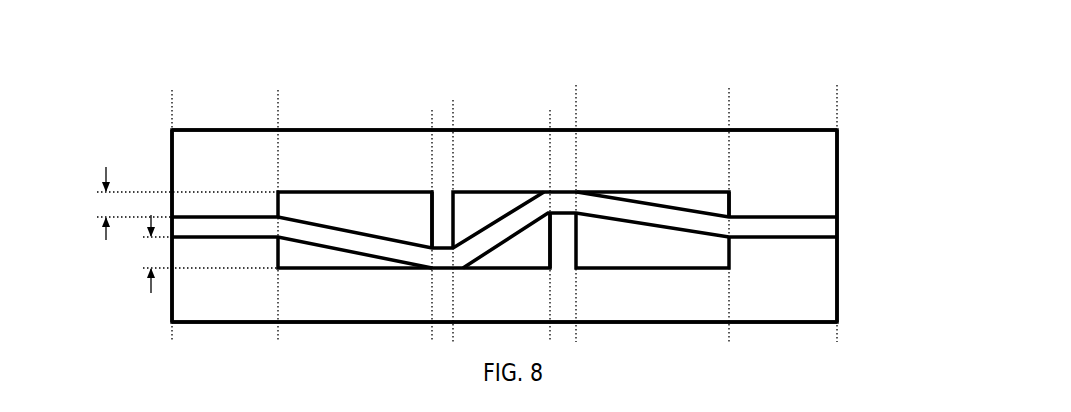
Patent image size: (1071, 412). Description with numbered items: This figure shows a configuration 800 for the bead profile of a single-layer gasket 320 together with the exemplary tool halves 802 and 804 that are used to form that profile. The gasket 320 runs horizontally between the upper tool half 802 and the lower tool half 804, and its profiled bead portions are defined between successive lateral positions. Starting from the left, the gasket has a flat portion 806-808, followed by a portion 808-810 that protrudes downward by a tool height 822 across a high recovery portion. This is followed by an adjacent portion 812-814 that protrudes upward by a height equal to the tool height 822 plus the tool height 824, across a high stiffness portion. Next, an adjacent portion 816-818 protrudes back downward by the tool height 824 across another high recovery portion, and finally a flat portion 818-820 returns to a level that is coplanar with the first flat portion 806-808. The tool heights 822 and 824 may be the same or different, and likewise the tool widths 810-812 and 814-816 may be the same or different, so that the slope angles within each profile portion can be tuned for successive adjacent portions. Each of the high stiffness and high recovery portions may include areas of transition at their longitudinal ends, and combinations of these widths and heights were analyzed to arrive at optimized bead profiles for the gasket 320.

The configuration 800 is at (866, 98).
The tool half 802 is at (504, 148).
The tool half 804 is at (504, 303).
The gasket 320 is at (838, 225).
The flat portion start position 806 is at (174, 108).
The flat portion end position 808 is at (280, 108).
The downward protruding portion end position 810 is at (433, 98).
The upward protruding portion start position 812 is at (454, 110).
The upward protruding portion end position 814 is at (551, 98).
The second downward protruding portion start position 816 is at (577, 110).
The second downward protruding portion end position 818 is at (731, 108).
The final flat portion end position 820 is at (839, 110).
The tool height 822 is at (150, 288).
The tool height 824 is at (104, 232).